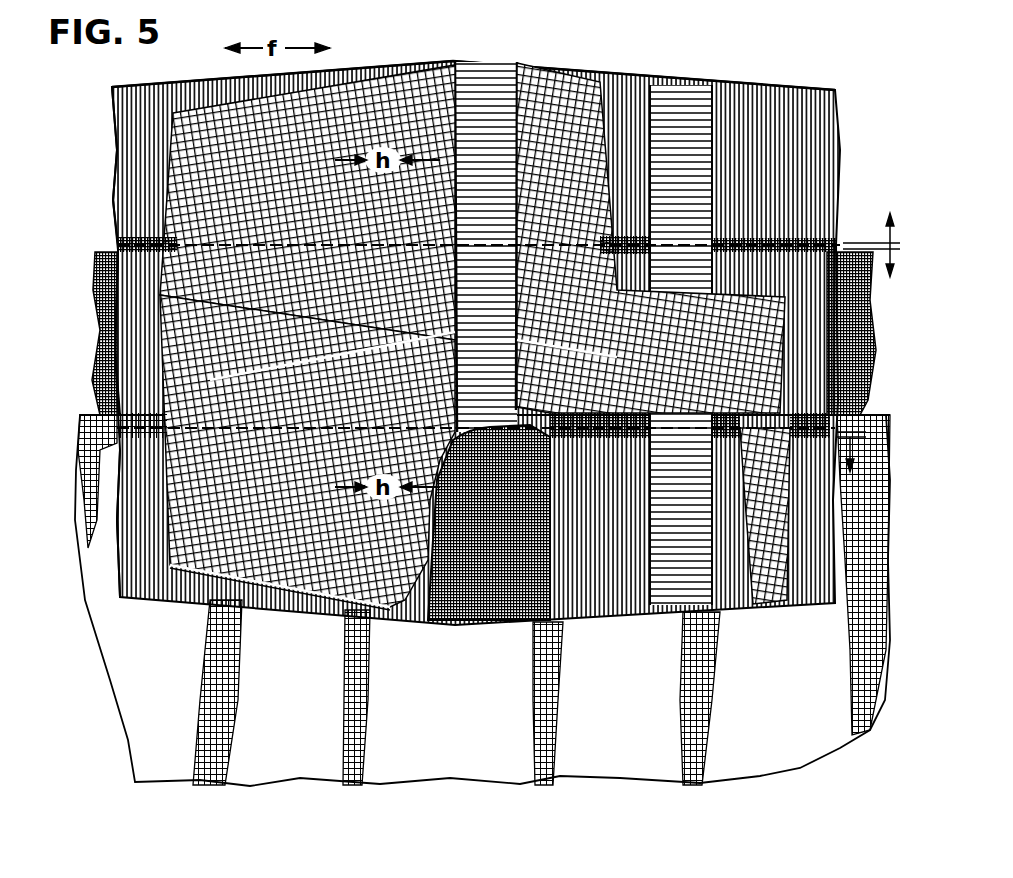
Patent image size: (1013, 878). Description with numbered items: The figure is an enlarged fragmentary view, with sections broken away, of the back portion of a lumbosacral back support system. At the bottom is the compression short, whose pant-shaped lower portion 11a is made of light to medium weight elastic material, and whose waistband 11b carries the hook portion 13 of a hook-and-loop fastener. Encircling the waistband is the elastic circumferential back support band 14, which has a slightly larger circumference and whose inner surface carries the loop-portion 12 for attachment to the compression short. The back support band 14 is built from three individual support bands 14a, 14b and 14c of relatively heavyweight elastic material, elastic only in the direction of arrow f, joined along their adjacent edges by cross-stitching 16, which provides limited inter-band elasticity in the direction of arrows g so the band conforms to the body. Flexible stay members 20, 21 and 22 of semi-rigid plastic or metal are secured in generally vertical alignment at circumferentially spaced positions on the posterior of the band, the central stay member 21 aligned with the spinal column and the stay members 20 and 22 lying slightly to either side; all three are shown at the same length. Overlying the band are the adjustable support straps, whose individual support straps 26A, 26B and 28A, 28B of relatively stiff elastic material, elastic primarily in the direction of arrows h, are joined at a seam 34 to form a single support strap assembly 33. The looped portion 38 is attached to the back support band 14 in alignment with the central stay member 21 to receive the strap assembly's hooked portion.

The lower portion 11a is at (775, 752).
The waistband 11b is at (875, 335).
The loop-portion 12 is at (857, 250).
The hook portion 13 is at (90, 300).
The back support band 14 is at (807, 103).
The individual support band 14a is at (140, 143).
The individual support band 14b is at (93, 277).
The individual support band 14c is at (135, 595).
The cross-stitching 16 is at (128, 220).
The flexible stay member 20 is at (293, 610).
The central stay member 21 is at (485, 95).
The flexible stay member 22 is at (712, 612).
The individual support strap 26A is at (563, 93).
The individual support strap 26B is at (780, 607).
The individual support strap 28A is at (203, 93).
The individual support strap 28B is at (285, 568).
The support strap assembly 33 is at (722, 72).
The seam 34 is at (507, 77).
The looped portion 38 is at (470, 623).